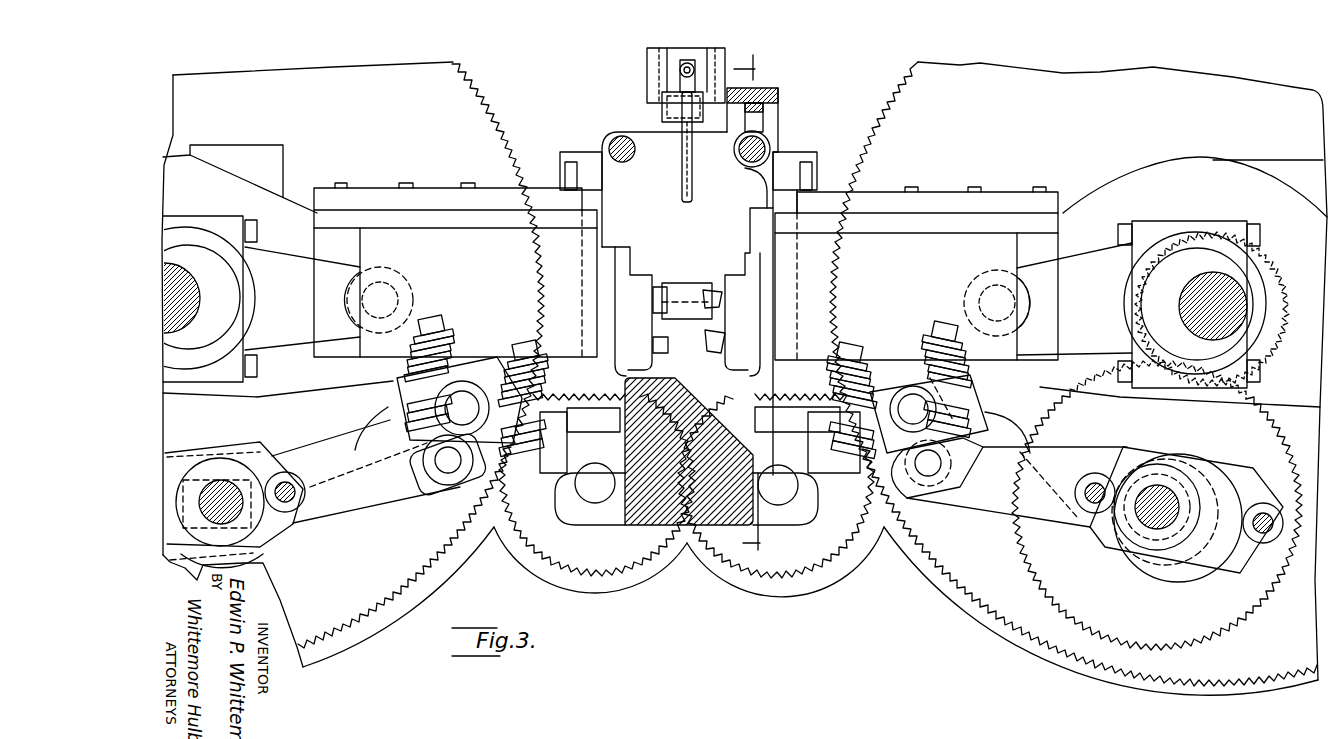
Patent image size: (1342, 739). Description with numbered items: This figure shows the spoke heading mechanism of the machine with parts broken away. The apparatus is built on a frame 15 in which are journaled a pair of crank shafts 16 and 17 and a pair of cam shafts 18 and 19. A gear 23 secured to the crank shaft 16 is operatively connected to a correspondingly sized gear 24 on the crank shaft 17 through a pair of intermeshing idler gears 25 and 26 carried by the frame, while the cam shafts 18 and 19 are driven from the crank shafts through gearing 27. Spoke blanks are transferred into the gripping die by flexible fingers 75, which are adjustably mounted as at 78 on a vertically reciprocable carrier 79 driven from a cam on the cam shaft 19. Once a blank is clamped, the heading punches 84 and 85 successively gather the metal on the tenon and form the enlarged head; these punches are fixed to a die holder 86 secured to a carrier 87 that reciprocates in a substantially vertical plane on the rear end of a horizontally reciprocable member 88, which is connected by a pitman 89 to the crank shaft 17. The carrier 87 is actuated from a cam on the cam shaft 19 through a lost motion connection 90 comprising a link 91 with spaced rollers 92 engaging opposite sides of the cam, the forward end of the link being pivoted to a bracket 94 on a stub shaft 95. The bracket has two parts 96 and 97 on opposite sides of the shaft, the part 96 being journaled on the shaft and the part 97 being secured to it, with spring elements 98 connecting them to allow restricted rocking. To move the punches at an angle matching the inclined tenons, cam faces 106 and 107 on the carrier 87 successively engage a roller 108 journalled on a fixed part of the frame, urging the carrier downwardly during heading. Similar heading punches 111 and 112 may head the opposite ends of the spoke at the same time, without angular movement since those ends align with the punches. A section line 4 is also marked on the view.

The section line 4- 4 is at (753, 306).
The frame 15 is at (440, 243).
The crank shaft 16 is at (185, 275).
The crank shaft 17 is at (1235, 293).
The cam shaft 18 is at (232, 483).
The cam shaft 19 is at (1125, 540).
The gear 23 is at (462, 97).
The gear 24 is at (887, 108).
The idler gear 25 is at (622, 577).
The idler gear 26 is at (793, 588).
The gearing 27 is at (1275, 350).
The flexible fingers 75 is at (684, 186).
The adjustable mounting 78 is at (653, 90).
The carrier 79 is at (662, 115).
The heading punch 84 is at (717, 278).
The heading punch 85 is at (738, 363).
The die holder 86 is at (688, 303).
The carrier 87 is at (797, 158).
The horizontally reciprocable member 88 is at (895, 245).
The pitman 89 is at (1085, 258).
The lost motion connection 90 is at (985, 406).
The link 91 is at (997, 503).
The rollers 92 is at (1094, 473).
The bracket 94 is at (917, 498).
The stub shaft 95 is at (910, 403).
The bracket part 96 is at (885, 455).
The bracket part 97 is at (873, 400).
The spring elements 98 is at (968, 350).
The cam face 106 is at (740, 162).
The cam face 107 is at (757, 203).
The roller 108 is at (782, 130).
The heading punch 111 is at (655, 290).
The heading punch 112 is at (689, 445).